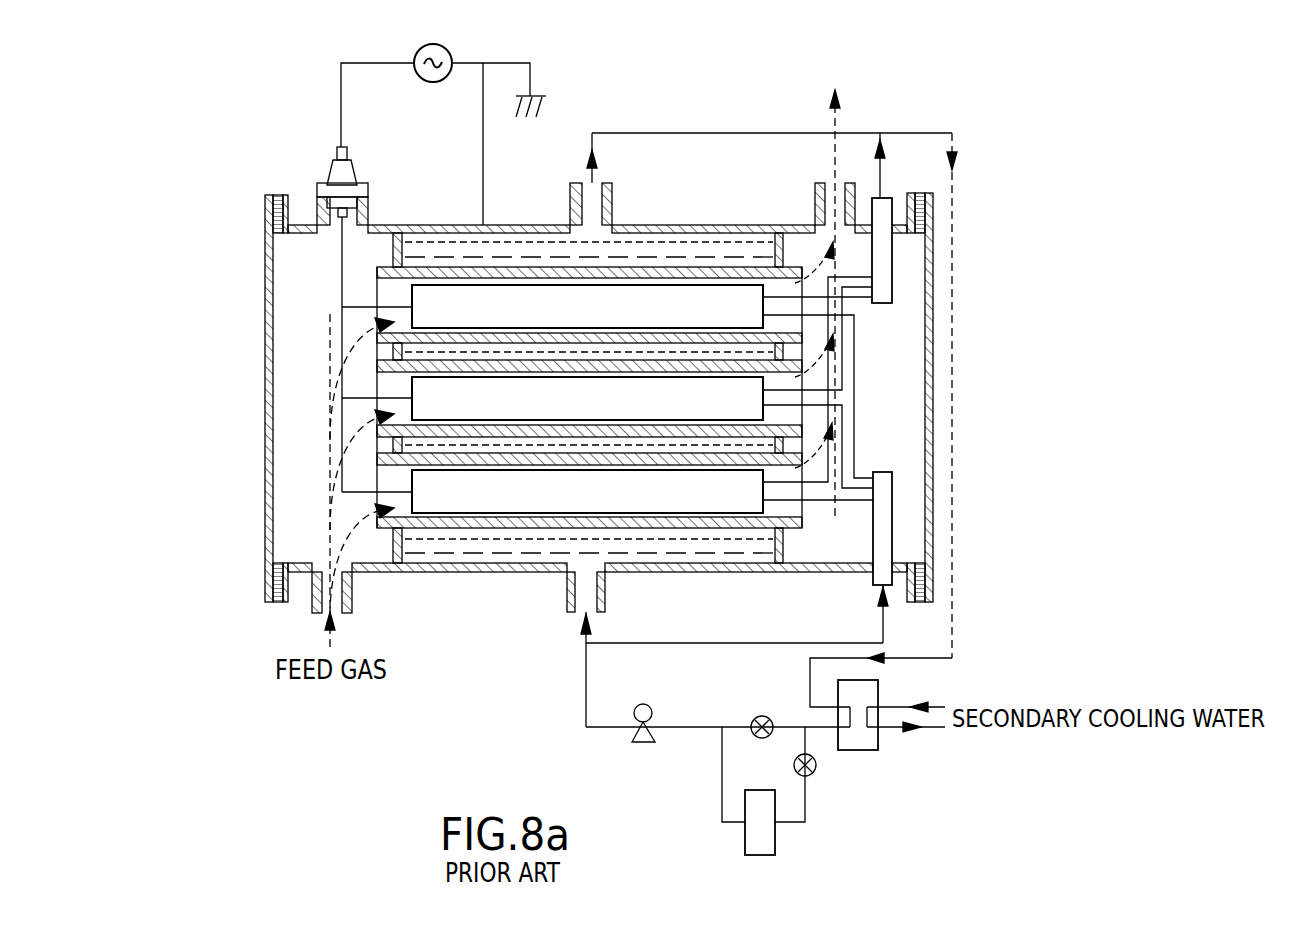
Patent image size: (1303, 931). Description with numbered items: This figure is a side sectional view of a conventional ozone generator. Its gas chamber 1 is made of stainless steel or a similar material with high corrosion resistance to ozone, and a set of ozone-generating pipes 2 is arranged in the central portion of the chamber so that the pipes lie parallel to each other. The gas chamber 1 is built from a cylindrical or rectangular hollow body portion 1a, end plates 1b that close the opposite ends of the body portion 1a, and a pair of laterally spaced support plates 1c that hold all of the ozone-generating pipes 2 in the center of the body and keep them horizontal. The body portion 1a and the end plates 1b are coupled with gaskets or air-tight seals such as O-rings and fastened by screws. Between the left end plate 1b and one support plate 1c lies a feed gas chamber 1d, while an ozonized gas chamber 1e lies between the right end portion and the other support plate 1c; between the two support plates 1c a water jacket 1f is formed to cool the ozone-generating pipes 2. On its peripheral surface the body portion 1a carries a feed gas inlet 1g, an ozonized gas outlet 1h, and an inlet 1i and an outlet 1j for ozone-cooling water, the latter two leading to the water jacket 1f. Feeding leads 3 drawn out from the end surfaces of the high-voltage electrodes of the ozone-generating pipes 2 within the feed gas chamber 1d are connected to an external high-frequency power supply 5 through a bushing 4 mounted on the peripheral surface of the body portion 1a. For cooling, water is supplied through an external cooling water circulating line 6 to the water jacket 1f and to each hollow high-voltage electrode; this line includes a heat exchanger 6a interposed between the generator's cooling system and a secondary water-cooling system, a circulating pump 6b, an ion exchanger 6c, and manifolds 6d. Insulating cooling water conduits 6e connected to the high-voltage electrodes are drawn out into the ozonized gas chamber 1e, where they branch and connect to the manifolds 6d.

The gas chamber 1 is at (262, 261).
The body portion 1a is at (645, 224).
The end plate 1b is at (265, 412).
The support plate 1c is at (402, 560).
The feed gas chamber 1d is at (318, 439).
The ozonized gas chamber 1e is at (906, 438).
The water jacket 1f is at (545, 555).
The feed gas inlet 1g is at (312, 606).
The ozonized gas outlet 1h is at (853, 180).
The cooling water inlet 1i is at (572, 613).
The cooling water outlet 1j is at (572, 180).
The ozone-generating pipe 2 is at (377, 270).
The feeding lead 3 is at (377, 325).
The bushing 4 is at (335, 168).
The high-frequency power supply 5 is at (417, 53).
The cooling water circulating line 6 is at (586, 728).
The heat exchanger 6a is at (868, 750).
The circulating pump 6b is at (643, 746).
The ion exchanger 6c is at (768, 847).
The manifold 6d is at (885, 241).
The cooling water conduit 6e is at (858, 378).